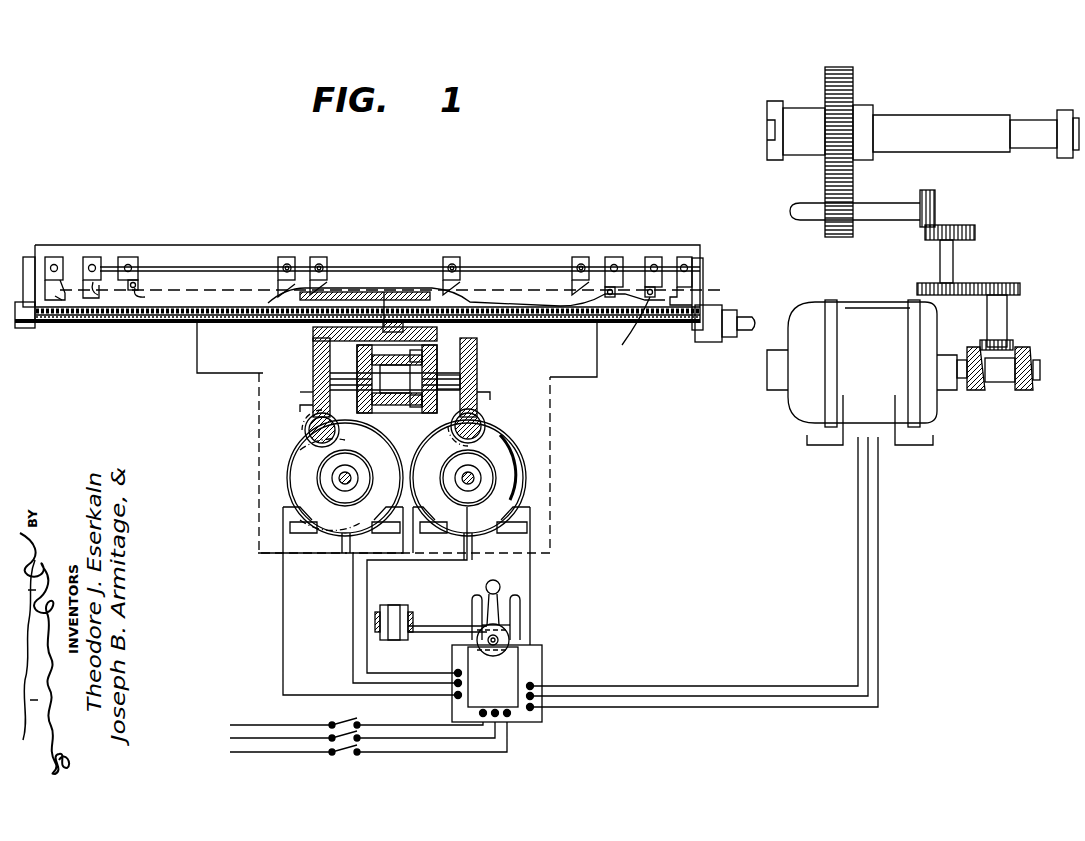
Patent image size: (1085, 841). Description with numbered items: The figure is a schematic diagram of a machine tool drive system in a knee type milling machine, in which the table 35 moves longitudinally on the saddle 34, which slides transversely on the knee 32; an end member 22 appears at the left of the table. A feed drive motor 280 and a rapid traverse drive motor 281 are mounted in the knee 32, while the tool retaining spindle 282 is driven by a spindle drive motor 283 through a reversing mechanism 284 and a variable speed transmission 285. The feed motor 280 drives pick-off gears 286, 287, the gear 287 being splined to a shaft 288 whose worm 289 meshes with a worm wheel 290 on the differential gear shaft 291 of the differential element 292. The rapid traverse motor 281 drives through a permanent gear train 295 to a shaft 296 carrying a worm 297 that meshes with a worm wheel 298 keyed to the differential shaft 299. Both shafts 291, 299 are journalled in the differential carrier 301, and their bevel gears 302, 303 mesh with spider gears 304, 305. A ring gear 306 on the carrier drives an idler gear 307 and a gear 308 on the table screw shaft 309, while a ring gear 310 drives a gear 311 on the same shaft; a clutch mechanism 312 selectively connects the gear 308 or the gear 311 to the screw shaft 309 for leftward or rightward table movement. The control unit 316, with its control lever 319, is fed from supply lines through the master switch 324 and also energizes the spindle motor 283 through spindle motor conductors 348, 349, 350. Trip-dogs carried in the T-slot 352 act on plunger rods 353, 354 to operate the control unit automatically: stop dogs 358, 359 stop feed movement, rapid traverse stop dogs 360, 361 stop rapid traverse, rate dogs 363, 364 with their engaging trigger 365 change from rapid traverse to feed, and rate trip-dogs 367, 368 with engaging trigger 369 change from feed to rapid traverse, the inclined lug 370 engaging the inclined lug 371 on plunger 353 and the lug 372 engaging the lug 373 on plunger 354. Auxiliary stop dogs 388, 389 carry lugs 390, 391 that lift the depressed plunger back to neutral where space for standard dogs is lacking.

The end plate 22 is at (26, 330).
The knee 32 is at (550, 540).
The saddle 34 is at (600, 377).
The table 35 is at (680, 250).
The feed drive motor 280 is at (300, 492).
The rapid traverse drive motor 281 is at (525, 475).
The tool retaining spindle 282 is at (765, 150).
The spindle drive motor 283 is at (806, 318).
The reversing mechanism 284 is at (995, 395).
The variable speed transmission 285 is at (958, 263).
The pick-off gear 286 is at (365, 468).
The pick-off gear 287 is at (324, 485).
The shaft 288 is at (305, 430).
The worm 289 is at (305, 436).
The worm wheel 290 is at (310, 355).
The differential gear shaft 291 is at (324, 381).
The differential element 292 is at (293, 397).
The permanent gear train 295 is at (480, 470).
The shaft 296 is at (485, 432).
The worm 297 is at (482, 420).
The worm wheel 298 is at (480, 350).
The differential shaft 299 is at (480, 380).
The differential carrier 301 is at (430, 350).
The bevel gear 302 is at (312, 412).
The bevel gear 303 is at (478, 398).
The spider gear 304 is at (397, 375).
The spider gear 305 is at (399, 399).
The ring gear 306 is at (375, 412).
The idler gear 307 is at (375, 343).
The gear 308 is at (466, 298).
The table screw shaft 309 is at (185, 322).
The ring gear 310 is at (430, 358).
The gear 311 is at (357, 329).
The clutch mechanism 312 is at (392, 290).
The control unit 316 is at (442, 656).
The control lever 319 is at (493, 580).
The master switch 324 is at (340, 716).
The spindle motor conductor 348 is at (600, 683).
The spindle motor conductor 349 is at (665, 692).
The spindle motor conductor 350 is at (622, 712).
The T-slot 352 is at (497, 268).
The plunger rod 353 is at (470, 605).
The plunger rod 354 is at (522, 612).
The stop dog 358 is at (322, 254).
The stop dog 359 is at (452, 254).
The rapid traverse stop dog 360 is at (578, 262).
The rapid traverse stop dog 361 is at (287, 254).
The rate dog 363 is at (132, 254).
The rate dog 364 is at (625, 240).
The engaging trigger 365 is at (156, 298).
The rate trip-dog 367 is at (92, 254).
The rate trip-dog 368 is at (650, 254).
The engaging trigger 369 is at (96, 296).
The inclined lug 370 is at (55, 300).
The inclined lug 371 is at (478, 590).
The lug 372 is at (615, 326).
The lug 373 is at (520, 600).
The auxiliary stop dog 388 is at (56, 254).
The auxiliary stop dog 389 is at (705, 258).
The lug 390 is at (48, 328).
The lug 391 is at (683, 300).